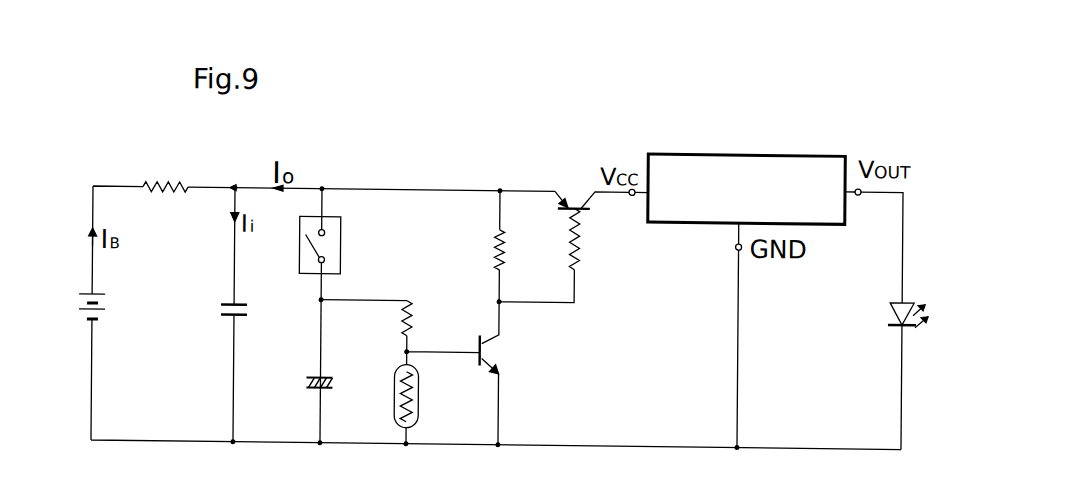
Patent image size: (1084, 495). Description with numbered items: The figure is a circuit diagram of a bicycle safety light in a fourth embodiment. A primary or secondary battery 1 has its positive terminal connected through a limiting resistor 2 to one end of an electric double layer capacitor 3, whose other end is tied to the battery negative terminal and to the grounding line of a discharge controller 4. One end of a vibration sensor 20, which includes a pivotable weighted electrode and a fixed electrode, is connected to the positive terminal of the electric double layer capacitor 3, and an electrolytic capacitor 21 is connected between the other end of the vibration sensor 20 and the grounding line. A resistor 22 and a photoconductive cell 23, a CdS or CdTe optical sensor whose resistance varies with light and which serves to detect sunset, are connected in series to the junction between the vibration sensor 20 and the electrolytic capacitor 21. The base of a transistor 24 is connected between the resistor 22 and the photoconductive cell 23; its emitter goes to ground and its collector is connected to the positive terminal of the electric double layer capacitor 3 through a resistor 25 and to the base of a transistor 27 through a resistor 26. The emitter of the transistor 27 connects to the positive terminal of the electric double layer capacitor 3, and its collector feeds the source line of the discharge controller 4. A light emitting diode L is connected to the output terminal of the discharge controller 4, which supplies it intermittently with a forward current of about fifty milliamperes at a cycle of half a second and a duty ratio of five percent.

The battery 1 is at (104, 292).
The limiting resistor 2 is at (186, 186).
The electric double layer capacitor 3 is at (243, 301).
The discharge controller 4 is at (700, 216).
The vibration sensor 20 is at (341, 253).
The electrolytic capacitor 21 is at (327, 374).
The resistor 22 is at (416, 311).
The photoconductive cell 23 is at (421, 402).
The transistor 24 is at (501, 340).
The resistor 25 is at (497, 232).
The resistor 26 is at (579, 258).
The transistor 27 is at (557, 191).
The light emitting diode L is at (896, 301).